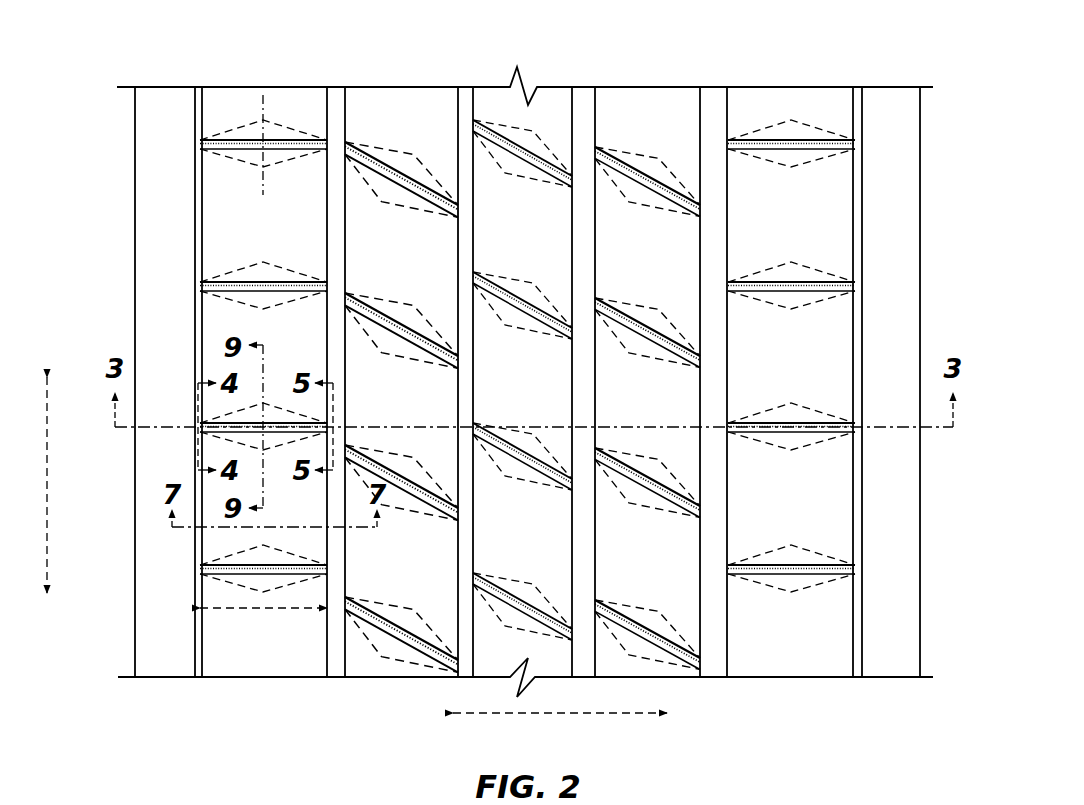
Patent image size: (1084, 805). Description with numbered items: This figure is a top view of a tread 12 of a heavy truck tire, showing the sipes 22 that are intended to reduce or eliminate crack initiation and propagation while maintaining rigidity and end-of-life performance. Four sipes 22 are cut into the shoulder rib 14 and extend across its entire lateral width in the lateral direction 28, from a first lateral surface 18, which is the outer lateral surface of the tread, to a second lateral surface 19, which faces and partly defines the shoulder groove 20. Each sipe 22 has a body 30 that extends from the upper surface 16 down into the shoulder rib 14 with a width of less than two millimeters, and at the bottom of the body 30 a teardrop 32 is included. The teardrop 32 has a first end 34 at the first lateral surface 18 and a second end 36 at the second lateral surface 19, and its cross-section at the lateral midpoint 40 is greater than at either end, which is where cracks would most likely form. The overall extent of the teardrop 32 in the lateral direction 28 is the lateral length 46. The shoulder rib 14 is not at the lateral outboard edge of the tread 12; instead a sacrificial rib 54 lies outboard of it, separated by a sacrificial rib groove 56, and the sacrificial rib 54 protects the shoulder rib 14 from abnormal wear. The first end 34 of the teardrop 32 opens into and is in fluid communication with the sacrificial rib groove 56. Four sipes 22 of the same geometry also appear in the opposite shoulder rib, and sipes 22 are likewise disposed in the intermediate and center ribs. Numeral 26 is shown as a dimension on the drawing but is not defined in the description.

The tread 12 is at (842, 48).
The shoulder rib 14 is at (230, 102).
The upper surface 16 is at (294, 102).
The first lateral surface 18 is at (200, 232).
The second lateral surface 19 is at (328, 205).
The shoulder groove 20 is at (336, 100).
The sipe 22 is at (402, 484).
The length 26 is at (47, 485).
The lateral direction 28 is at (260, 300).
The body 30 is at (290, 291).
The teardrop 32 is at (285, 271).
The first end 34 is at (200, 284).
The second end 36 is at (327, 283).
The lateral midpoint 40 is at (263, 175).
The lateral length 46 is at (283, 609).
The sacrificial rib 54 is at (160, 598).
The sacrificial rib groove 56 is at (195, 663).